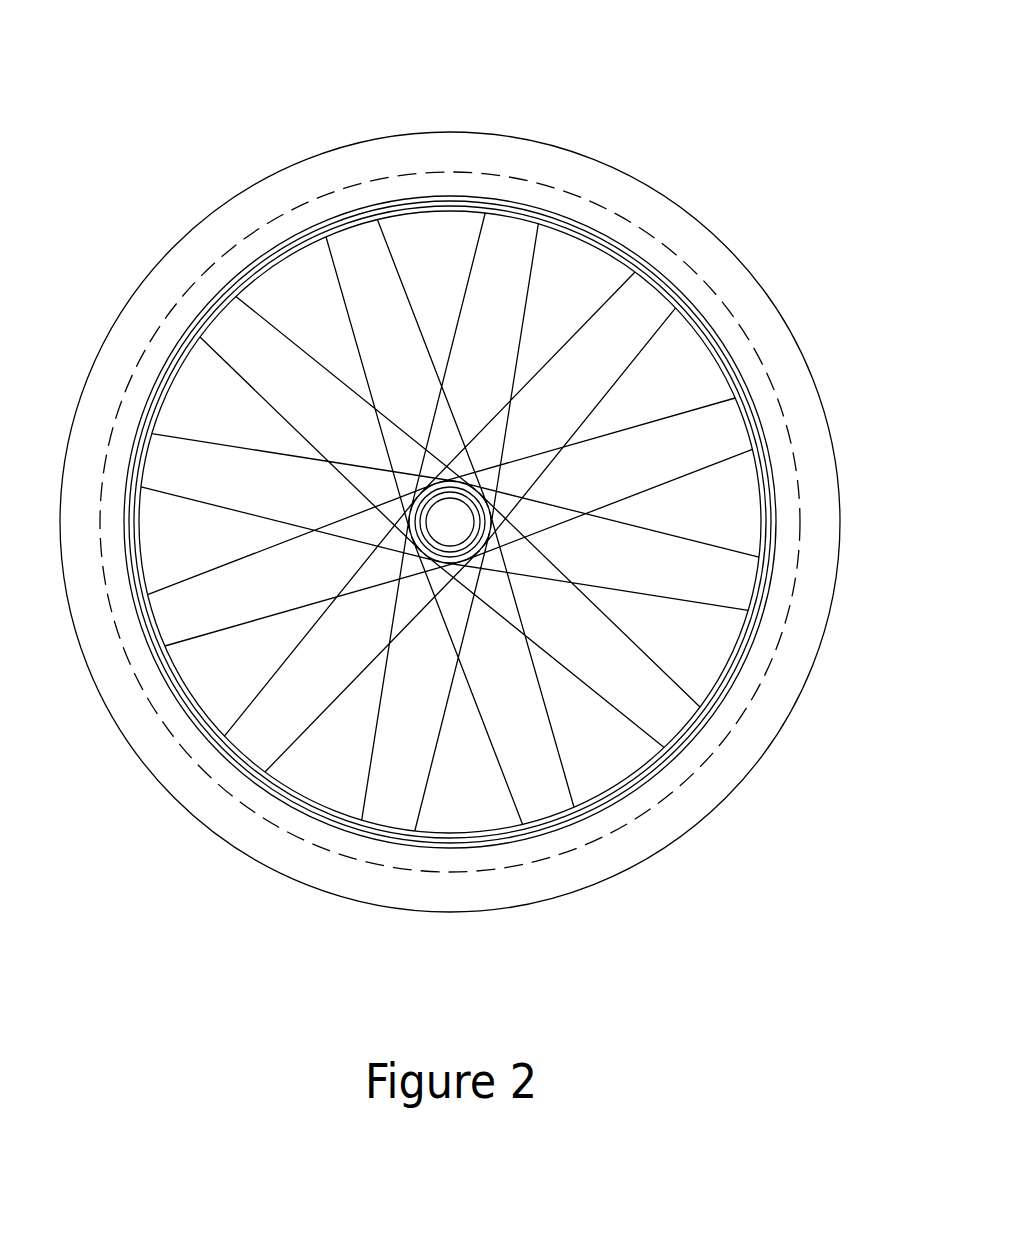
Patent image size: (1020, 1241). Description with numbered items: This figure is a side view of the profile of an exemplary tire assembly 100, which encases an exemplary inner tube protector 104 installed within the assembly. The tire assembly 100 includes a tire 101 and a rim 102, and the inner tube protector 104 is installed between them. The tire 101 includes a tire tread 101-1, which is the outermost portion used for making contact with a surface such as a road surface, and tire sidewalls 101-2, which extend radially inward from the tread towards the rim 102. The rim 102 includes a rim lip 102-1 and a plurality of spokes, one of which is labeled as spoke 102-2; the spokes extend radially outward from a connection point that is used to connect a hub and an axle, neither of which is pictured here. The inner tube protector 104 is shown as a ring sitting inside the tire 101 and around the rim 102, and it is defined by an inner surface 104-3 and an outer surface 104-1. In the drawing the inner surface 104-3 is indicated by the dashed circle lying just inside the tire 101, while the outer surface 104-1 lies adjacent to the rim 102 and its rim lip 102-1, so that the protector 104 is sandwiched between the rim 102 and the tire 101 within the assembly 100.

The tire assembly 100 is at (357, 978).
The tire 101 is at (495, 155).
The tire tread 101-1 is at (798, 150).
The tire sidewalls 101-2 is at (703, 277).
The rim 102 is at (708, 317).
The rim lip 102-1 is at (733, 370).
The spoke 102-2 is at (168, 493).
The inner tube protector 104 is at (342, 203).
The outer surface 104-1 is at (233, 272).
The inner surface 104-3 is at (272, 212).